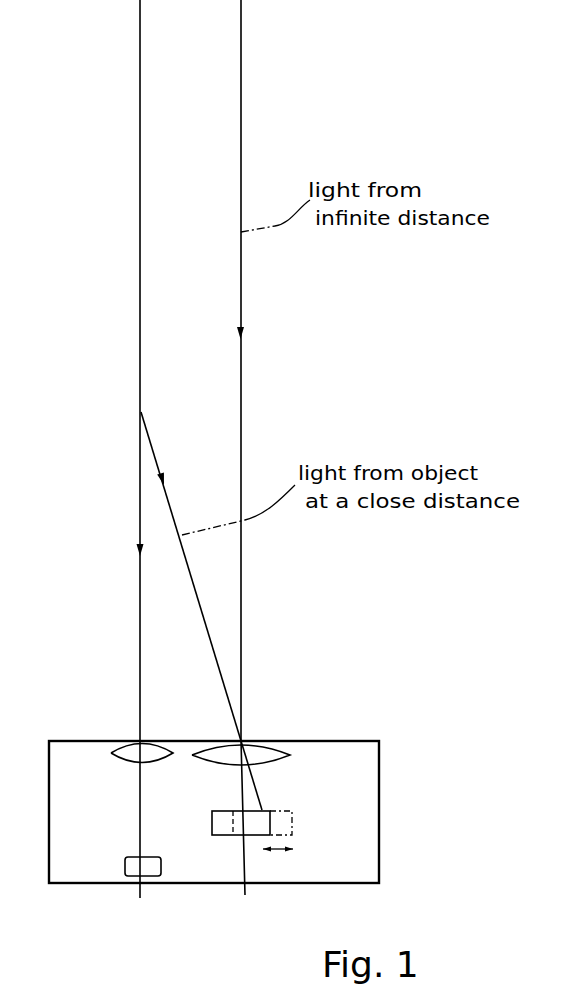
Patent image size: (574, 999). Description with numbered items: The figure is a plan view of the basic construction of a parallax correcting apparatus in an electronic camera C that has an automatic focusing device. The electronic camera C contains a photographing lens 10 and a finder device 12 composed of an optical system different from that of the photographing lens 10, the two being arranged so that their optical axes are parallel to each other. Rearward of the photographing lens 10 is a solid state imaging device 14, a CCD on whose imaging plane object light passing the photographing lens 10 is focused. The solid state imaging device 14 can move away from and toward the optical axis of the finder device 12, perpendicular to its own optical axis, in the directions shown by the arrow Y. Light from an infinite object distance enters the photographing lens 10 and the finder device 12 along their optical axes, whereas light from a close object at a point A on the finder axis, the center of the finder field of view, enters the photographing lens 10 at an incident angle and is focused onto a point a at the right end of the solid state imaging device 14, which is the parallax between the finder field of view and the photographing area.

The photographing lens 10 is at (272, 752).
The finder device 12 is at (109, 745).
The solid state imaging device 14 is at (246, 463).
The point A is at (141, 411).
The electronic camera C is at (367, 750).
The point a is at (262, 810).
The arrow Y is at (289, 855).